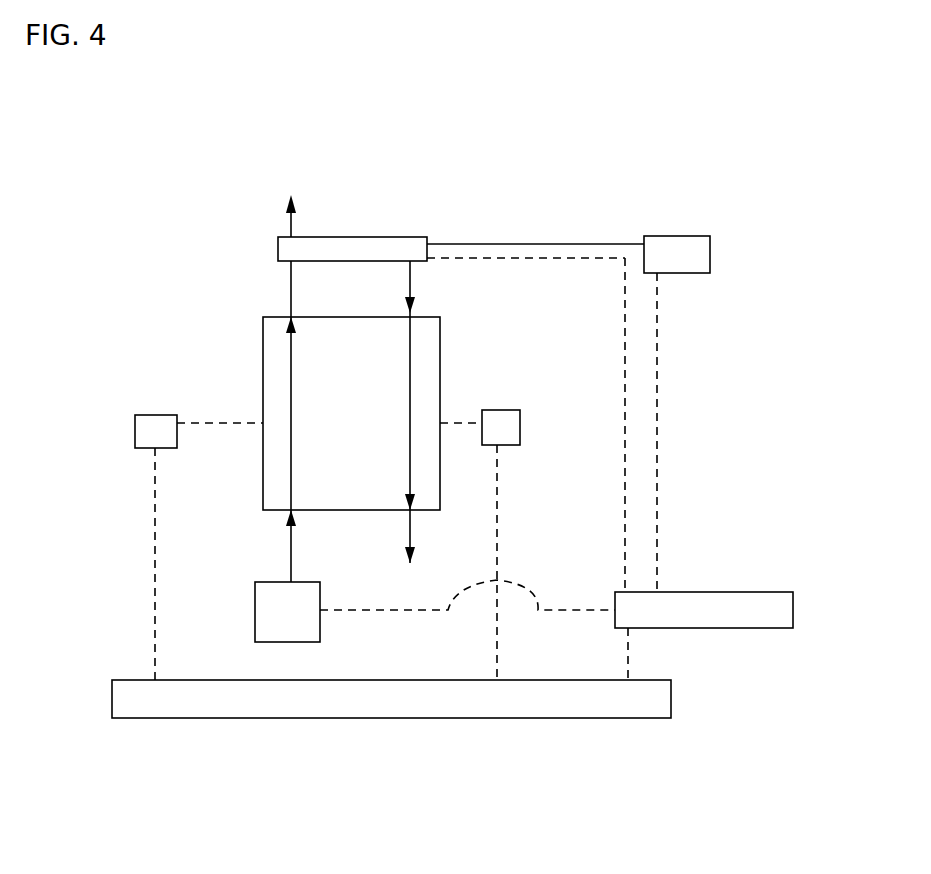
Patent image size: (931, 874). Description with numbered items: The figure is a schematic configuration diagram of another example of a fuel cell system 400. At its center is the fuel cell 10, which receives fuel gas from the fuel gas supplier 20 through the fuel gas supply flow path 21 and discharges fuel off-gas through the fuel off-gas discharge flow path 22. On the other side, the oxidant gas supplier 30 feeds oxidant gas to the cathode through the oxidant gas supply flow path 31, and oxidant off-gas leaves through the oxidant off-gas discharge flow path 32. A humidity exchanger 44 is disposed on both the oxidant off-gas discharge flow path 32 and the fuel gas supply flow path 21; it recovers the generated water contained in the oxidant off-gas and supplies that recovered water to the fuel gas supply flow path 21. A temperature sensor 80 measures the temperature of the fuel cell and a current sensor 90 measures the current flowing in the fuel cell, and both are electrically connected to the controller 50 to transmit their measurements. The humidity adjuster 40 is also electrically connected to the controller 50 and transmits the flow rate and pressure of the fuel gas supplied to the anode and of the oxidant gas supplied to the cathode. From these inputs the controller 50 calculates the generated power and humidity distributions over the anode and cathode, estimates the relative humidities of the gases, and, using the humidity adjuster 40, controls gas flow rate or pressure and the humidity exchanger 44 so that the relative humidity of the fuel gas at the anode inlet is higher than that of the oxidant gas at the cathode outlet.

The fuel cell system 400 is at (763, 114).
The humidity exchanger 44 is at (340, 237).
The fuel gas supply flow path 21 is at (528, 244).
The fuel gas supplier 20 is at (676, 273).
The fuel cell 10 is at (263, 486).
The oxidant off-gas discharge flow path 32 is at (291, 292).
The oxidant gas supply flow path 31 is at (289, 528).
The fuel off-gas discharge flow path 22 is at (408, 545).
The oxidant gas supplier 30 is at (255, 612).
The current sensor 90 is at (135, 418).
The temperature sensor 80 is at (520, 432).
The humidity adjuster 40 is at (675, 628).
The controller 50 is at (671, 694).